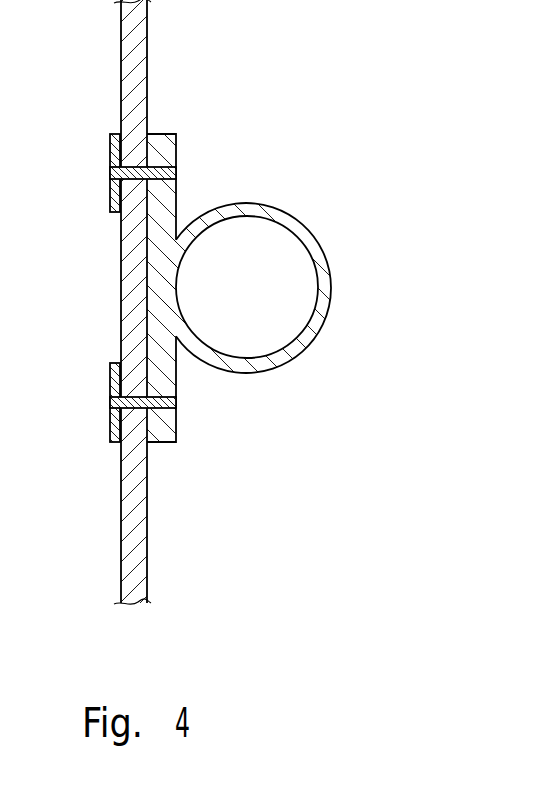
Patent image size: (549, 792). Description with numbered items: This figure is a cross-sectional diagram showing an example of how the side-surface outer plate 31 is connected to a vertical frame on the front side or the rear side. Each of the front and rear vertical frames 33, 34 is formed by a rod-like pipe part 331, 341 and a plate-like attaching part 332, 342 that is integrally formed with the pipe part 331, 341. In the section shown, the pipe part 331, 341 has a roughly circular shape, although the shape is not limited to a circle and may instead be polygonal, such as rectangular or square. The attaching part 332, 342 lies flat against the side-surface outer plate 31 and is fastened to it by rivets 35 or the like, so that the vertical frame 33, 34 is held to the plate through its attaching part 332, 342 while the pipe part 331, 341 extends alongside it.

The side-surface outer plate 31 is at (147, 43).
The front vertical frame 33 is at (310, 273).
The rear vertical frame 34 is at (310, 273).
The rivet 35 is at (110, 165).
The pipe part 331 is at (317, 288).
The pipe part 341 is at (332, 287).
The attaching part 332 is at (244, 292).
The attaching part 342 is at (177, 379).